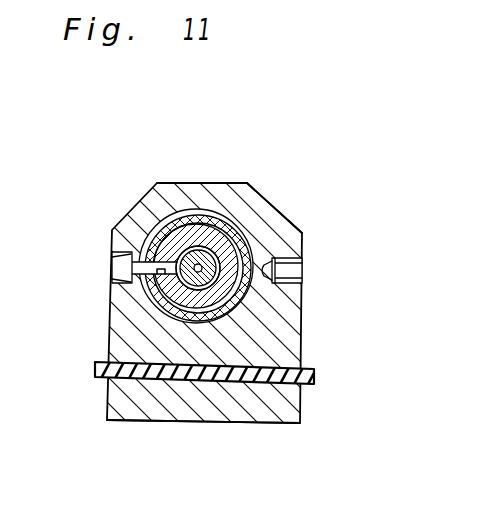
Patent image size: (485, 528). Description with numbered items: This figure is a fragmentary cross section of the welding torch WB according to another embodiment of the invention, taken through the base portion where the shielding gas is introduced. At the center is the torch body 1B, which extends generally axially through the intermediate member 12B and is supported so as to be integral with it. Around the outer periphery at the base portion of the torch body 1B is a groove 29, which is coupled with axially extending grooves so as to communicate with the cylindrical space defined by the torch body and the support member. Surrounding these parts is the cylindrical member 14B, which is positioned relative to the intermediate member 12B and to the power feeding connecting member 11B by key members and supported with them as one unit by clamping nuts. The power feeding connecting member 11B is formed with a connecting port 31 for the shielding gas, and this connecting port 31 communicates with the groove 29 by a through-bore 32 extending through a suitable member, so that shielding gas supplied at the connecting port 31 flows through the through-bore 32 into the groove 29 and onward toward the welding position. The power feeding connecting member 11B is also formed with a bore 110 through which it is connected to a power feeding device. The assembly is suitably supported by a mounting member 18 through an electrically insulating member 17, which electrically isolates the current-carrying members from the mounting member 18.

The torch body 1B is at (194, 250).
The groove 29 is at (200, 249).
The cylindrical member 14B is at (247, 248).
The intermediate member 12B is at (223, 293).
The power feeding connecting member 11B is at (280, 345).
The electrically insulating member 17 is at (316, 378).
The mounting member 18 is at (300, 423).
The connecting port 31 is at (120, 259).
The through-bore 32 is at (166, 273).
The bore 110 is at (304, 268).
The welding torch WB is at (333, 142).